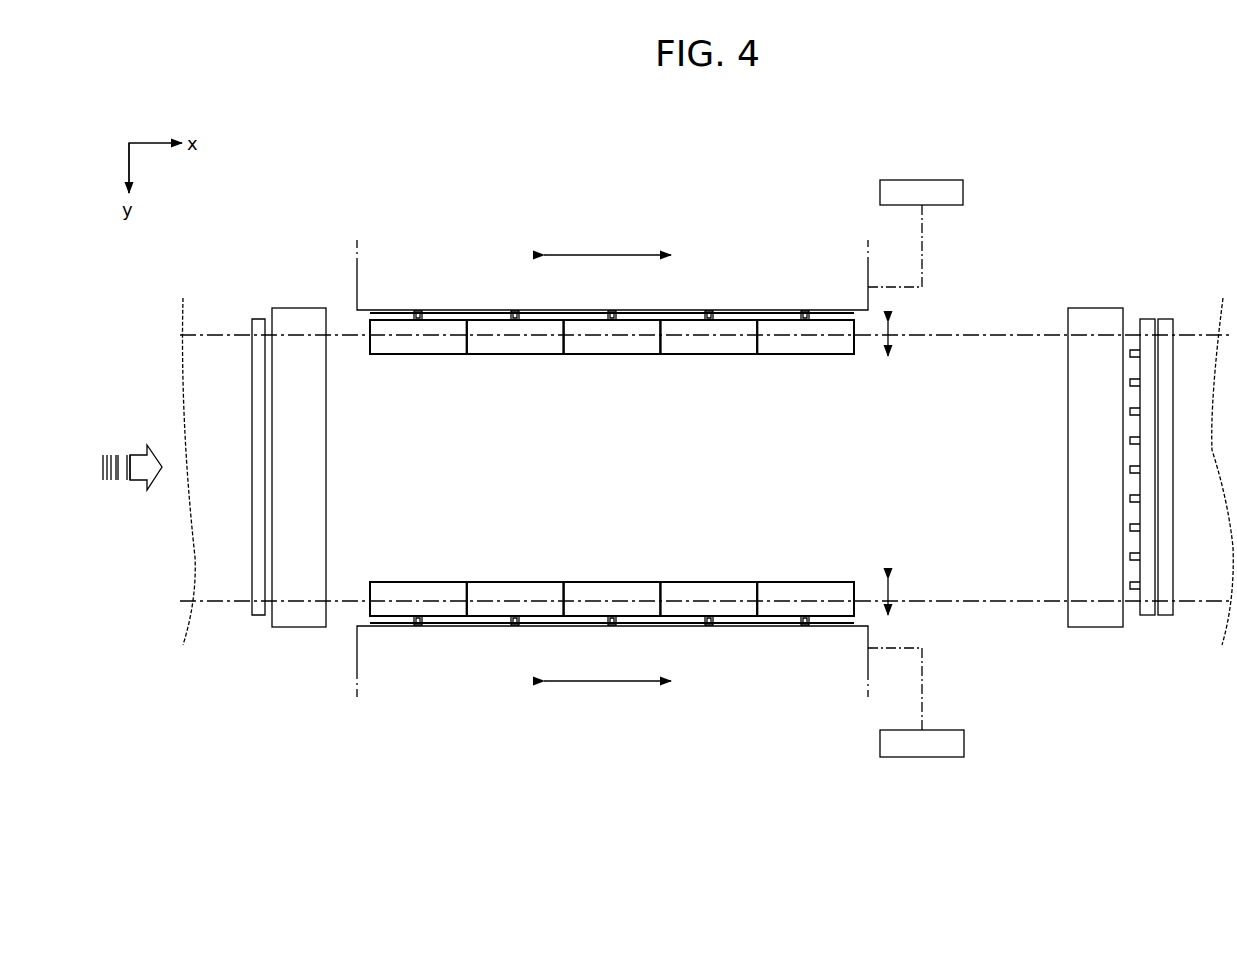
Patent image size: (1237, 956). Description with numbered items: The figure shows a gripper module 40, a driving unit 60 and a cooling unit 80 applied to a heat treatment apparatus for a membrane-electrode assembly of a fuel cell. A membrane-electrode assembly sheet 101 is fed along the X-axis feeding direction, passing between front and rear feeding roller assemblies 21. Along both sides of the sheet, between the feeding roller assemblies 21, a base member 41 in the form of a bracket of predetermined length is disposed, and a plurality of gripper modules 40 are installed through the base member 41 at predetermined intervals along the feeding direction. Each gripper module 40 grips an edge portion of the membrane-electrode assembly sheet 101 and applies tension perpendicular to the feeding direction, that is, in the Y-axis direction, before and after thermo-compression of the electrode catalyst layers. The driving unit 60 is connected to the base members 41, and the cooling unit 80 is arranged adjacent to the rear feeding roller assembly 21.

The membrane-electrode assembly sheet 101 is at (216, 335).
The front feeding roller assembly 21 is at (293, 630).
The gripper module 40 is at (580, 360).
The base member 41 is at (357, 285).
The driving unit 60 is at (963, 192).
The cooling unit 80 is at (1141, 306).